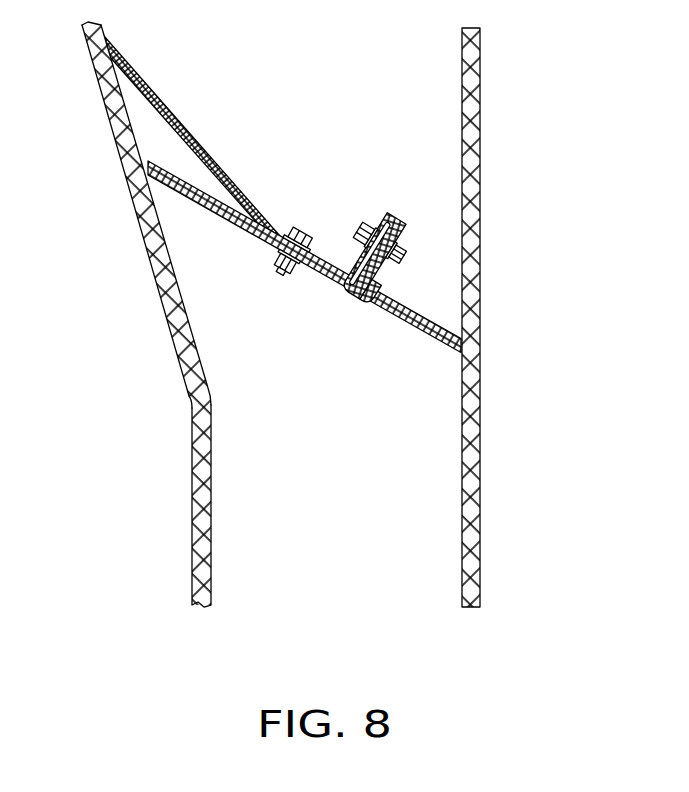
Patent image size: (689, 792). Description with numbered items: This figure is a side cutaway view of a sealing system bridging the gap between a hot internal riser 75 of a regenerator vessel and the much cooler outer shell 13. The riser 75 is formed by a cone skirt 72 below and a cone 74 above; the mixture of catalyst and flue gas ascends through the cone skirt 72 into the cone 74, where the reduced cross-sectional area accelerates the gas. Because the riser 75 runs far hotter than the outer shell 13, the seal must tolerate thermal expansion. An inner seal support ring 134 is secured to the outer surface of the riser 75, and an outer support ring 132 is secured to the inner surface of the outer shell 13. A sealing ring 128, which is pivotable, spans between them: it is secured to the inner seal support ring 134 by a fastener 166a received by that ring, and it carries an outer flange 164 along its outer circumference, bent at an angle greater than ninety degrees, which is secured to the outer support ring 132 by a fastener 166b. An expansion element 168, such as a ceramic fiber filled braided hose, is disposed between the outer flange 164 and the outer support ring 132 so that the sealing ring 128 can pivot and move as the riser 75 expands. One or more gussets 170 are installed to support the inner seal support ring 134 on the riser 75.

The outer shell 13 is at (470, 297).
The cone skirt 72 is at (203, 518).
The cone 74 is at (133, 173).
The internal riser 75 is at (136, 314).
The sealing ring 128 is at (354, 242).
The outer support ring 132 is at (408, 322).
The inner seal support ring 134 is at (255, 234).
The outer flange 164 is at (383, 232).
The fastener 166a is at (300, 228).
The fastener 166b is at (320, 157).
The expansion element 168 is at (348, 290).
The gusset 170 is at (158, 100).